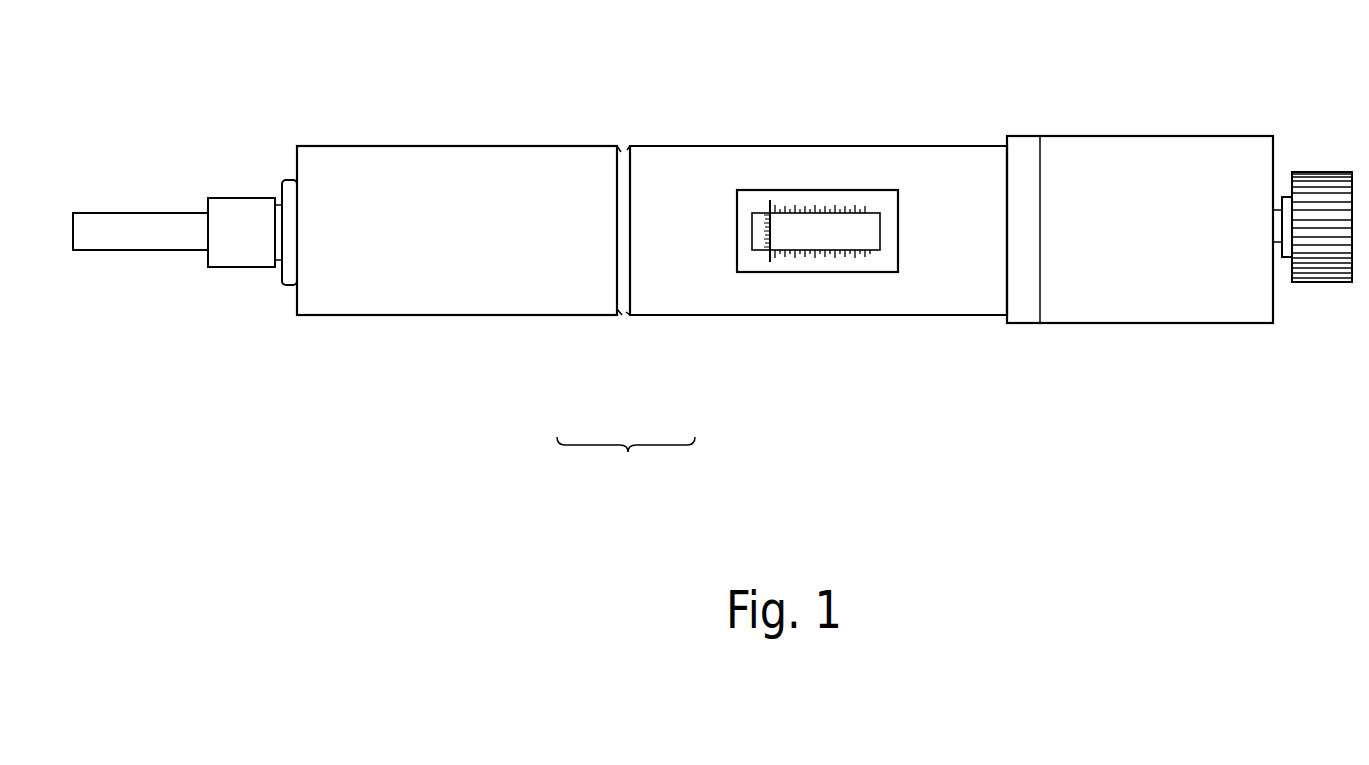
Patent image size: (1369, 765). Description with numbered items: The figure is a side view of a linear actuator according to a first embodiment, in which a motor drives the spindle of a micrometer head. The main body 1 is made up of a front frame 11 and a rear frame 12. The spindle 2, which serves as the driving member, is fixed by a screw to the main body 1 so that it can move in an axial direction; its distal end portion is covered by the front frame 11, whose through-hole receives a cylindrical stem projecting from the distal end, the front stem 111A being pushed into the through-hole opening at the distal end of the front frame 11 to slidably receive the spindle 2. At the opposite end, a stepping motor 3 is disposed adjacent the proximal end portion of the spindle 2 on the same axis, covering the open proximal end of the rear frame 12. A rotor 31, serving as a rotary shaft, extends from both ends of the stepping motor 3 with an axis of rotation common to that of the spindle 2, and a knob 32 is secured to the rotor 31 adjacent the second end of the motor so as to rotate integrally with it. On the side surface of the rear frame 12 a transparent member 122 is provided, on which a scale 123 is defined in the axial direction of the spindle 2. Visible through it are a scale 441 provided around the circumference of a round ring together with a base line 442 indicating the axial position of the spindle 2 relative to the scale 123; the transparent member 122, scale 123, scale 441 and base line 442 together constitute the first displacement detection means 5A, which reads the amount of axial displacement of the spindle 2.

The main body 1 is at (638, 487).
The spindle 2 is at (102, 243).
The stepping motor 3 is at (1152, 302).
The first displacement detection means 5A is at (825, 161).
The front frame 11 is at (570, 307).
The rear frame 12 is at (698, 302).
The rotor 31 is at (1275, 205).
The knob 32 is at (1328, 187).
The front stem 111A is at (245, 255).
The transparent member 122 is at (870, 233).
The scale 123 is at (828, 171).
The scale 441 is at (777, 207).
The base line 442 is at (768, 232).